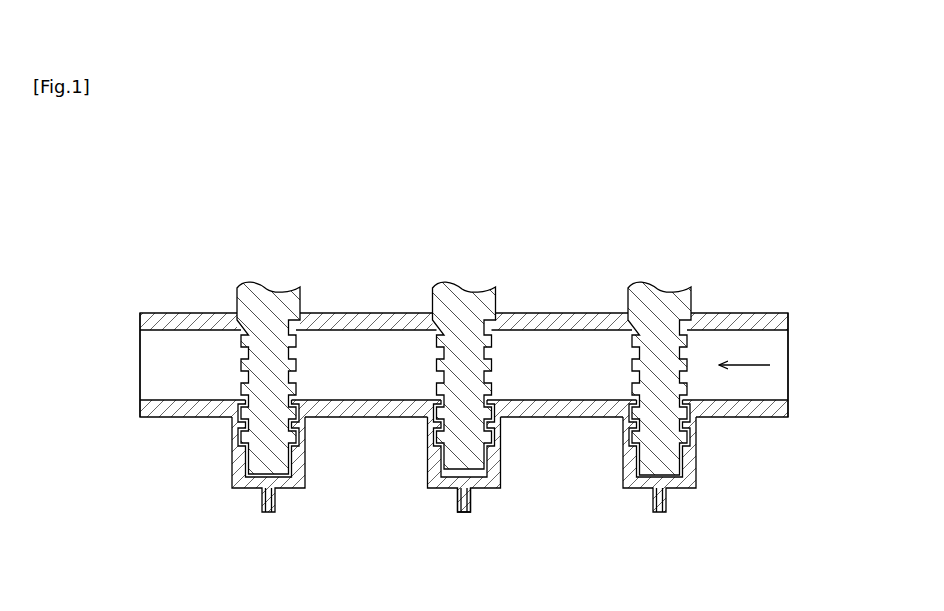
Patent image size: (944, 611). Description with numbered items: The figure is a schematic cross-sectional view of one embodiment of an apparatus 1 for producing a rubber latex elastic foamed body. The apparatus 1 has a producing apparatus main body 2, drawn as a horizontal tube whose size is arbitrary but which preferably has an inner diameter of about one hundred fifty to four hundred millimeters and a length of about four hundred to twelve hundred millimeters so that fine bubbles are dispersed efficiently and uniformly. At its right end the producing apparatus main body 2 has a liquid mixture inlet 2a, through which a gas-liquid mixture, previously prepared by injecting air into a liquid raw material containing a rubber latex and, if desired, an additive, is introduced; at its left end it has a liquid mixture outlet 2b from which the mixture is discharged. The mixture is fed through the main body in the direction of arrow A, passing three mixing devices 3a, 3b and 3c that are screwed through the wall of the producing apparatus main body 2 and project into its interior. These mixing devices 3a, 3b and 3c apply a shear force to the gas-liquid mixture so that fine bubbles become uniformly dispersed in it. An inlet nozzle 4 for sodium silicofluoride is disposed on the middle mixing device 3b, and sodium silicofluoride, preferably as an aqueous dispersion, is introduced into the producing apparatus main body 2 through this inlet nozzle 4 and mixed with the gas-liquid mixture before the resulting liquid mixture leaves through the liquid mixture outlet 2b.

The apparatus for producing a rubber latex elastic foamed body 1 is at (569, 272).
The producing apparatus main body 2 is at (740, 318).
The liquid mixture inlet 2a is at (808, 358).
The liquid mixture outlet 2b is at (117, 357).
The mixing device 3a is at (666, 292).
The mixing device 3b is at (473, 290).
The mixing device 3c is at (278, 290).
The inlet nozzle 4 is at (475, 500).
The arrow indicating feed direction A is at (750, 365).